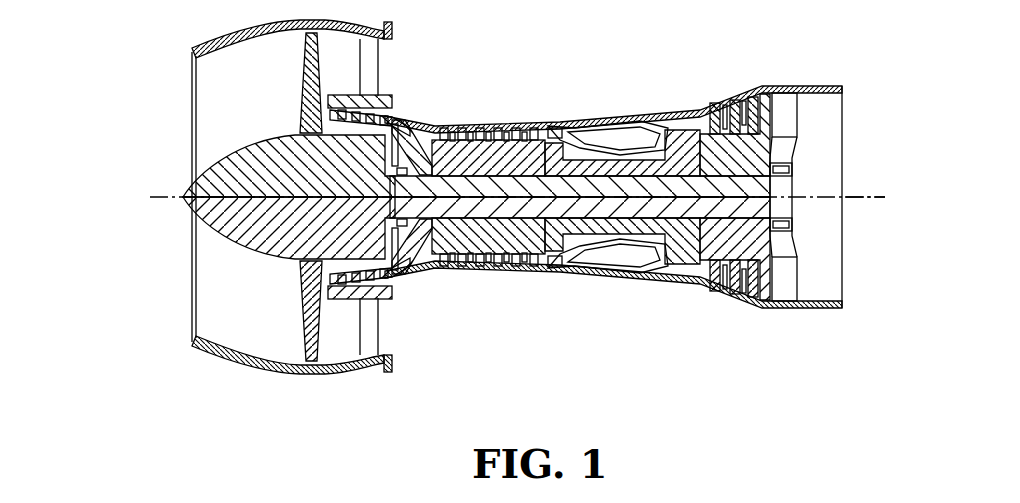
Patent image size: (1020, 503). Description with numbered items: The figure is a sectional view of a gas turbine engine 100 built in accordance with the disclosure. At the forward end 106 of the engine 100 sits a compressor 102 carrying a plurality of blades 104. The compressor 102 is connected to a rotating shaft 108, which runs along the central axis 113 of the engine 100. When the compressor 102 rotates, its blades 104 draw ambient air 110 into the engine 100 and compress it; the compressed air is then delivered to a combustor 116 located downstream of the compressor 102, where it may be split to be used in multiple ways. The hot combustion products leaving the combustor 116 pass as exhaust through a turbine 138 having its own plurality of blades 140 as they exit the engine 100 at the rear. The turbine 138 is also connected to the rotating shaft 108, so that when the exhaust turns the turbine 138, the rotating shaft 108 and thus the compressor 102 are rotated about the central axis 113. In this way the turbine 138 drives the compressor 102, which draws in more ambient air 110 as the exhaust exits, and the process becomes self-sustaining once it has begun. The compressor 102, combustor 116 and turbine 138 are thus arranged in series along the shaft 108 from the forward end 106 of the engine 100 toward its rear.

The gas turbine engine 100 is at (585, 315).
The compressor 102 is at (528, 148).
The blades 104 is at (545, 145).
The forward end 106 is at (425, 108).
The rotating shaft 108 is at (465, 205).
The ambient air 110 is at (153, 278).
The central axis 113 is at (845, 197).
The combustor 116 is at (625, 140).
The turbine 138 is at (718, 268).
The blades 140 is at (763, 270).